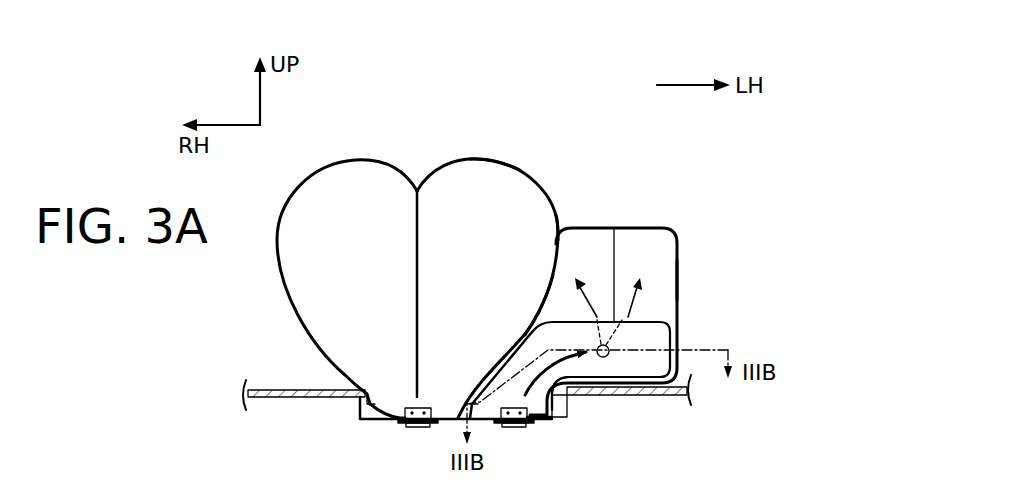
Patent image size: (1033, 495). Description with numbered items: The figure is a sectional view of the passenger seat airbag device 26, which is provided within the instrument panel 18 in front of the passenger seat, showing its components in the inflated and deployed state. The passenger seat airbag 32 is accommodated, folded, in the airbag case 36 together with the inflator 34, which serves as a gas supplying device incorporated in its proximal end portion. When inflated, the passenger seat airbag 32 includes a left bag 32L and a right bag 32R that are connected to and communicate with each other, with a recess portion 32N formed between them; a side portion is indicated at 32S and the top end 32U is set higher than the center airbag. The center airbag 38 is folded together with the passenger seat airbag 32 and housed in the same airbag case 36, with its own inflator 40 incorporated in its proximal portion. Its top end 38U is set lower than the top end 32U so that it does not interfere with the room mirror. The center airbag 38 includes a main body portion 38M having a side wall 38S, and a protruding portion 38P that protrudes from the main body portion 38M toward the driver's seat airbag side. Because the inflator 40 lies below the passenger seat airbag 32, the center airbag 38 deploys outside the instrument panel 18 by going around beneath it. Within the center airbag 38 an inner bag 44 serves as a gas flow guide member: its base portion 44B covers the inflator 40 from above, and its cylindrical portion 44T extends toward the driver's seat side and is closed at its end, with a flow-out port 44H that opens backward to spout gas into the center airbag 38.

The instrument panel 18 is at (278, 390).
The passenger seat airbag device 26 is at (522, 108).
The passenger seat airbag 32 is at (485, 88).
The right bag 32R is at (357, 182).
The left bag 32L is at (468, 180).
The recess portion 32N is at (414, 178).
The top end of the passenger seat airbag 32U is at (507, 164).
The side portion of airbag 32S is at (556, 215).
The inflator 34 is at (413, 427).
The airbag case 36 is at (353, 432).
The center airbag 38 is at (787, 157).
The main body portion 38M is at (602, 240).
The top end of the center airbag 38U is at (598, 226).
The protruding portion 38P is at (670, 280).
The side wall 38S is at (553, 275).
The inflator 40 is at (510, 427).
The inner bag 44 is at (656, 314).
The cylindrical portion 44T is at (578, 385).
The flow-out port 44H is at (610, 356).
The base portion 44B is at (547, 422).